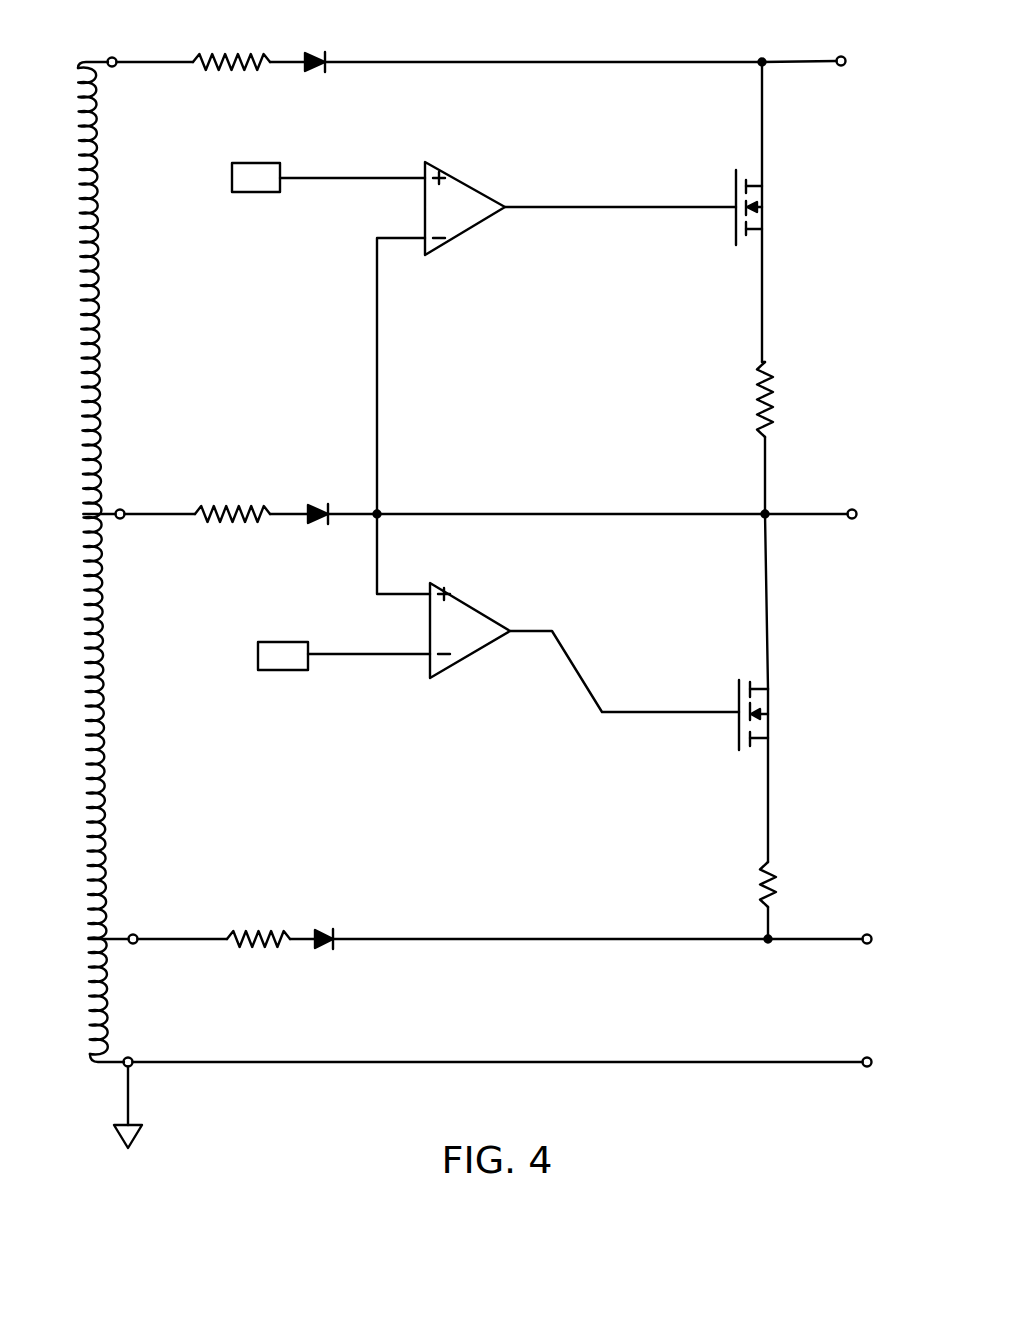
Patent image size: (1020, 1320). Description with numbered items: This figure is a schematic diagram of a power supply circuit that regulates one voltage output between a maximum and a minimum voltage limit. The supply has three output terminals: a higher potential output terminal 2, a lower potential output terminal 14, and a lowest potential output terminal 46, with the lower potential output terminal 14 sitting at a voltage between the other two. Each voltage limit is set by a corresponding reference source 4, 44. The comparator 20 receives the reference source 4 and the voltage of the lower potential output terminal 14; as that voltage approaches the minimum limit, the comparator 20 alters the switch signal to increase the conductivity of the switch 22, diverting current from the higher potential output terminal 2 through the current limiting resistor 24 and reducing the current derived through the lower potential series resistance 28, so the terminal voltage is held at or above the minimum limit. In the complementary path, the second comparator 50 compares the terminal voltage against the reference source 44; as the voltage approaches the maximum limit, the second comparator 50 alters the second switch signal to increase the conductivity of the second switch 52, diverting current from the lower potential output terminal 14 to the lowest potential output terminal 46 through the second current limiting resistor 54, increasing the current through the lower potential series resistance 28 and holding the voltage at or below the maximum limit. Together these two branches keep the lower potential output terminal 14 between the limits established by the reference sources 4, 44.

The higher potential output terminal 2 is at (845, 66).
The reference source 4 is at (248, 192).
The lower potential output terminal 14 is at (852, 519).
The comparator 20 is at (462, 178).
The switch 22 is at (736, 188).
The current limiting resistor 24 is at (758, 400).
The lower potential series resistance 28 is at (238, 519).
The reference source 44 is at (275, 670).
The lowest potential output terminal 46 is at (865, 945).
The second comparator 50 is at (467, 601).
The second switch 52 is at (738, 745).
The second current limiting resistor 54 is at (762, 885).